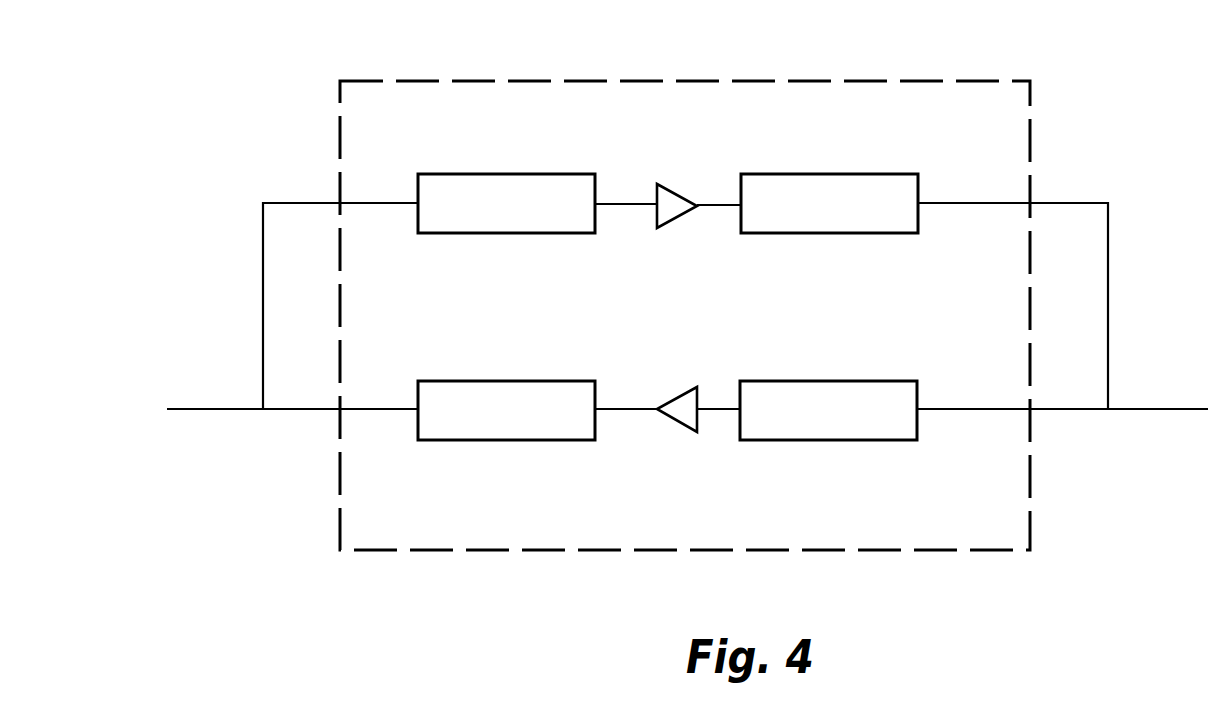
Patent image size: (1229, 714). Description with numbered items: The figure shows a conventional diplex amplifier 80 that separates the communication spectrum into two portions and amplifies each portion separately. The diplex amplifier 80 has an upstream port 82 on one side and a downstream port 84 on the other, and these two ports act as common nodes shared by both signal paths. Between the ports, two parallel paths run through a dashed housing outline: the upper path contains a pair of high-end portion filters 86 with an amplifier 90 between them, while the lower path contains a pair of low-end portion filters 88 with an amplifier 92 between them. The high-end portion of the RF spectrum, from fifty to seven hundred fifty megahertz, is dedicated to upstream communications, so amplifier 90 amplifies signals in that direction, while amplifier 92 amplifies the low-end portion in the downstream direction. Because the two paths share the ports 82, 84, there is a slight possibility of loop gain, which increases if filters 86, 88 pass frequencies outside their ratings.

The diplex amplifier 80 is at (865, 81).
The upstream port 82 is at (226, 409).
The downstream port 84 is at (1162, 409).
The high-end portion filters 86 is at (447, 174).
The low-end portion filters 88 is at (462, 381).
The amplifier 90 is at (660, 184).
The amplifier 92 is at (681, 387).